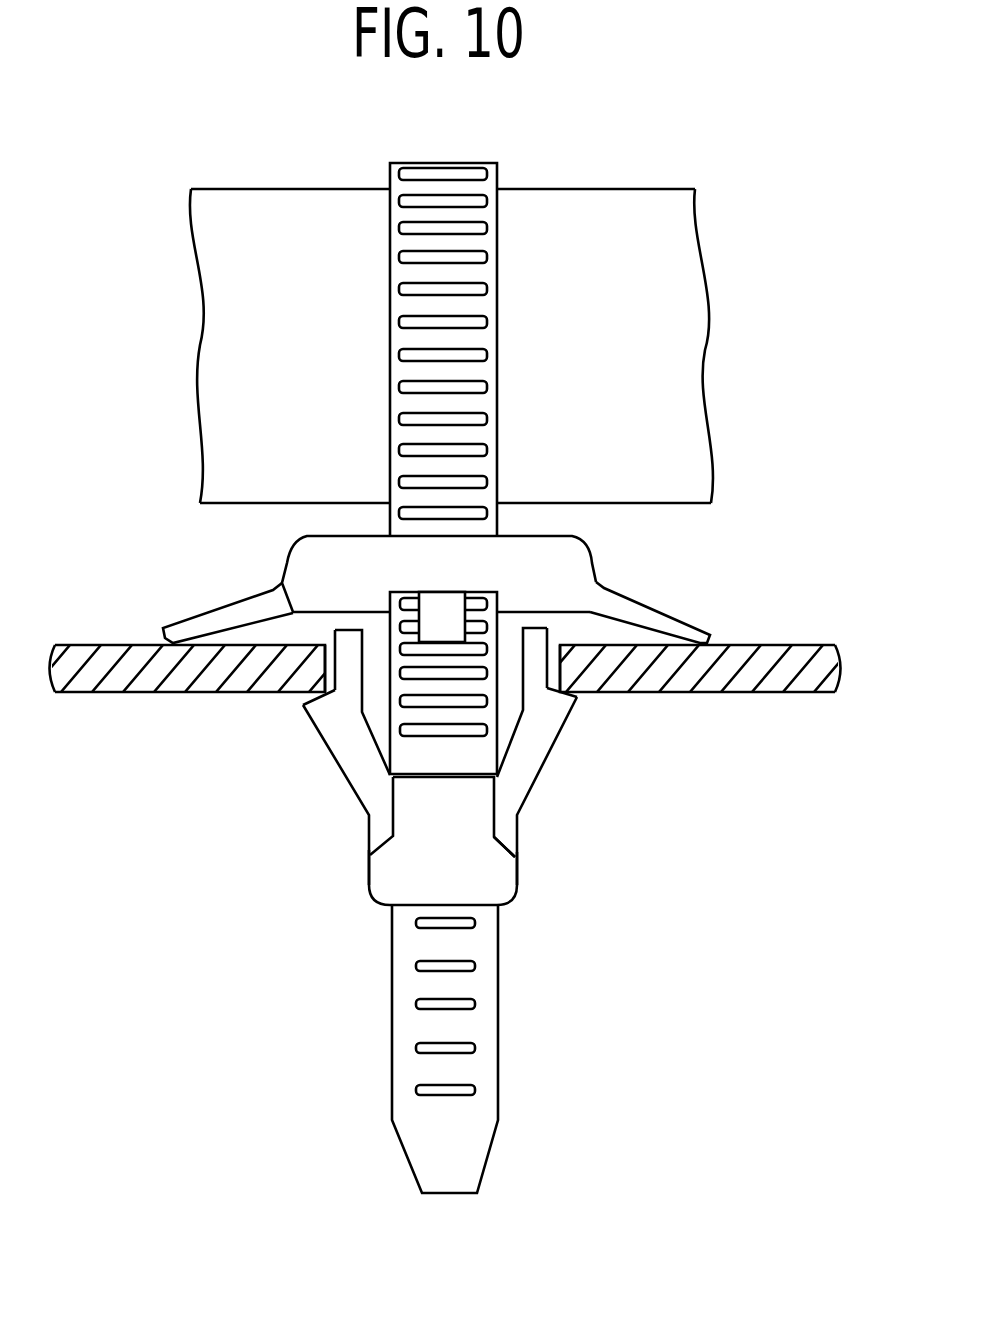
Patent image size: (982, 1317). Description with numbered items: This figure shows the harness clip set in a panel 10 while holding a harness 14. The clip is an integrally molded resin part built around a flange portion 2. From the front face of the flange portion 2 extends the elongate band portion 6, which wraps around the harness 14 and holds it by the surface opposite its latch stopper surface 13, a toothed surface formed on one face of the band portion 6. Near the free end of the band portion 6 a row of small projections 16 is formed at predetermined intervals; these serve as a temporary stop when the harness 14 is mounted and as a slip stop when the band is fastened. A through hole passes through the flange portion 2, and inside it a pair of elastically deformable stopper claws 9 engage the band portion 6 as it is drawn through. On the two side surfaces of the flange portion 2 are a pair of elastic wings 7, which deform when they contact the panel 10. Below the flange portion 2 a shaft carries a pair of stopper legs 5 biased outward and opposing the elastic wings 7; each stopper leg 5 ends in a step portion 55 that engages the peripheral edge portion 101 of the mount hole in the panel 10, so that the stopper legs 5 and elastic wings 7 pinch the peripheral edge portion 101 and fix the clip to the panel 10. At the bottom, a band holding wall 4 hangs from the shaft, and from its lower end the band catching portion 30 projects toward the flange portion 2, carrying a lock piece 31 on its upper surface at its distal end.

The flange portion 2 is at (565, 560).
The band holding wall 4 is at (413, 878).
The stopper legs 5 is at (358, 763).
The band portion 6 is at (497, 240).
The elastic wings 7 is at (213, 610).
The stopper claws 9 is at (433, 647).
The panel 10 is at (805, 693).
The latch stopper surface 13 is at (398, 290).
The harness 14 is at (624, 212).
The small projections 16 is at (450, 1052).
The band catching portion 30 is at (422, 776).
The lock piece 31 is at (463, 813).
The step portion 55 is at (307, 697).
The peripheral edge portion 101 is at (563, 676).